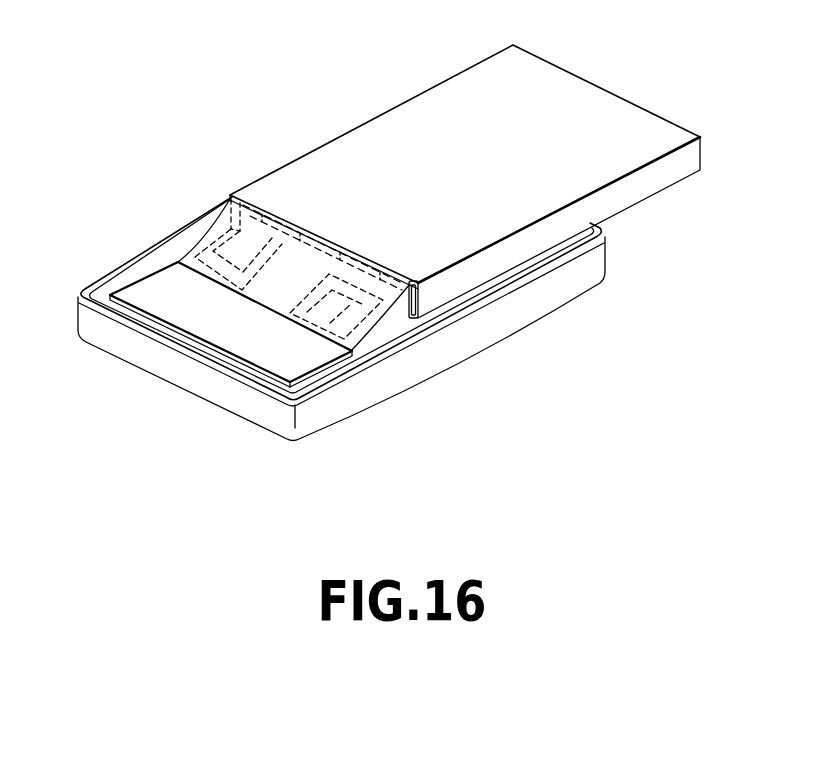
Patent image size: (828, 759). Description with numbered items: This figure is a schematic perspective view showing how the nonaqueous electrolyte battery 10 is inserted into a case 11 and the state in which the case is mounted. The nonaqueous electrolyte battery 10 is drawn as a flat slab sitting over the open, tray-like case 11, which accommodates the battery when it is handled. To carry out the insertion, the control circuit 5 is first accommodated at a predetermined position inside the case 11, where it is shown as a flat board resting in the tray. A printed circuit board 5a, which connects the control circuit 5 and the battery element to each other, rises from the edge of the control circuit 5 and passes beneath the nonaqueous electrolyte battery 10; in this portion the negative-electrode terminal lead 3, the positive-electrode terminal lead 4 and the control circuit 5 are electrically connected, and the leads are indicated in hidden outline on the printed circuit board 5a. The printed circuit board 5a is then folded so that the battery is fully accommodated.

The nonaqueous electrolyte battery 10 is at (395, 80).
The case 11 is at (512, 322).
The control circuit 5 is at (227, 333).
The printed circuit board 5a is at (387, 310).
The negative-electrode terminal lead 3 is at (233, 252).
The positive-electrode terminal lead 4 is at (350, 300).